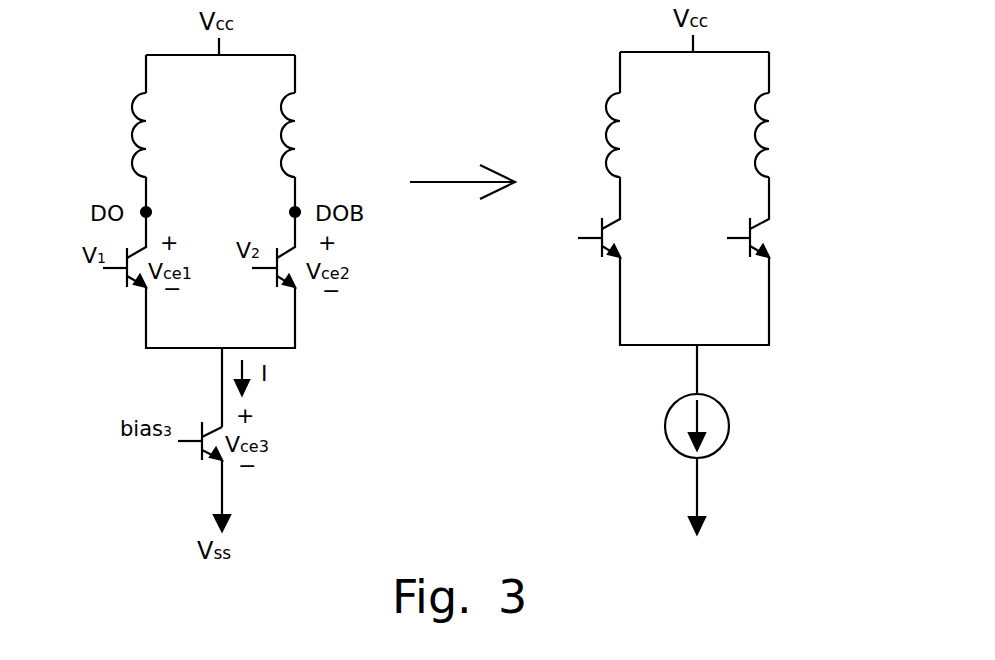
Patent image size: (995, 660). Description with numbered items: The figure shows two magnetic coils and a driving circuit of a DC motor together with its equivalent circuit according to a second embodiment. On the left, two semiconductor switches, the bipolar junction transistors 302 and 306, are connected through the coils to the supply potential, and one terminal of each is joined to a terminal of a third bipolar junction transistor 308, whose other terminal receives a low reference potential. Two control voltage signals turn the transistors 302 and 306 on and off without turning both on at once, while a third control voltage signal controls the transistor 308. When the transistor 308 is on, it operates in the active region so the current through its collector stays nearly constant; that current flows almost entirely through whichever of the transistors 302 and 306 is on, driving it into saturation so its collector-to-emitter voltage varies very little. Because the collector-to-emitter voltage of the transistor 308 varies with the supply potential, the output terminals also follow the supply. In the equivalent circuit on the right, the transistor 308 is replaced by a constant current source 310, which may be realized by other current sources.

The bipolar junction transistor 302 is at (120, 278).
The bipolar junction transistor 306 is at (298, 270).
The bipolar junction transistor 308 is at (196, 447).
The constant current source 310 is at (724, 442).